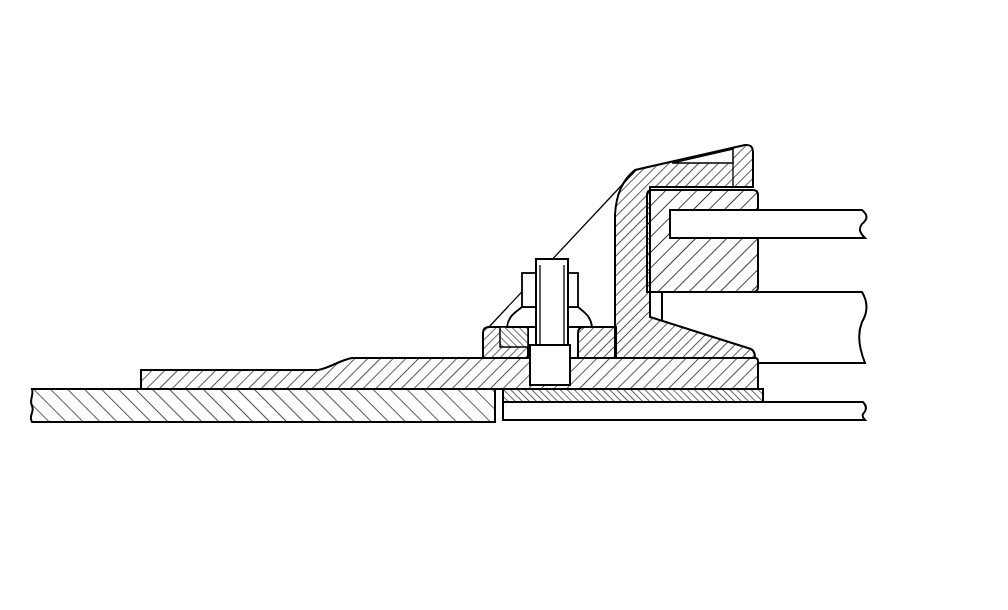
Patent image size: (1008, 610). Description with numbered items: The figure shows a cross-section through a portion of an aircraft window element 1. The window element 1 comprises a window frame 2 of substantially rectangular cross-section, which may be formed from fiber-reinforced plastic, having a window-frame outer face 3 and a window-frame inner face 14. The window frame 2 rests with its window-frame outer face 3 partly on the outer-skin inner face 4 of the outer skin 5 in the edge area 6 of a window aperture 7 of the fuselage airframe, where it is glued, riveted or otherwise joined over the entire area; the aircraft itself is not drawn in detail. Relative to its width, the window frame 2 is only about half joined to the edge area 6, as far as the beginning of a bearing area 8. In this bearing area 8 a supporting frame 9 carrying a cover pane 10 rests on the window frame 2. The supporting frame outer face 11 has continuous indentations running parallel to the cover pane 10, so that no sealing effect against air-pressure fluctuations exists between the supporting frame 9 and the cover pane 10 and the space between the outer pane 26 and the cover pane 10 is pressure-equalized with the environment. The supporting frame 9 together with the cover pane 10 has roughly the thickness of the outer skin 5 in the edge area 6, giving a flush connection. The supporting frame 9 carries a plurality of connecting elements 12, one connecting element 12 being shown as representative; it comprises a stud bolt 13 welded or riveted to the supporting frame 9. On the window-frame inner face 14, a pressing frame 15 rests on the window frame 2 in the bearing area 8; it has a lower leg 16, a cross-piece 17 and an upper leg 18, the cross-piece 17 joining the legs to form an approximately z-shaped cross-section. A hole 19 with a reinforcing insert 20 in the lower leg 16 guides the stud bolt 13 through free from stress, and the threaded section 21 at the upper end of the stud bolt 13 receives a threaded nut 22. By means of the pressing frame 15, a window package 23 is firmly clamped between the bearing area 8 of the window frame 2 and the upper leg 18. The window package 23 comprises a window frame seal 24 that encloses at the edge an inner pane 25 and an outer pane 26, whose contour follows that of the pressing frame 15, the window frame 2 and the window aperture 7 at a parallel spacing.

The window element 1 is at (742, 99).
The window frame 2 is at (210, 375).
The window-frame outer face 3 is at (359, 401).
The outer-skin inner face 4 is at (93, 379).
The outer skin 5 is at (163, 422).
The edge area 6 is at (409, 194).
The window aperture 7 is at (791, 474).
The bearing area 8 is at (601, 474).
The supporting frame 9 is at (740, 400).
The cover pane 10 is at (820, 410).
The supporting frame outer face 11 is at (700, 413).
The connecting element 12 is at (507, 184).
The stud bolt 13 is at (550, 270).
The window-frame inner face 14 is at (406, 349).
The pressing frame 15 is at (653, 137).
The lower leg 16 is at (483, 334).
The cross-piece 17 is at (633, 242).
The upper leg 18 is at (753, 157).
The hole 19 is at (585, 346).
The insert 20 is at (508, 323).
The threaded section 21 is at (526, 272).
The threaded nut 22 is at (522, 290).
The window package 23 is at (853, 175).
The window frame seal 24 is at (743, 255).
The inner pane 25 is at (810, 215).
The outer pane 26 is at (840, 300).